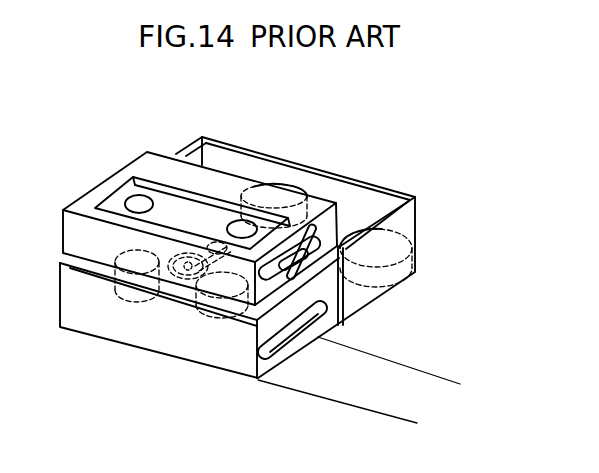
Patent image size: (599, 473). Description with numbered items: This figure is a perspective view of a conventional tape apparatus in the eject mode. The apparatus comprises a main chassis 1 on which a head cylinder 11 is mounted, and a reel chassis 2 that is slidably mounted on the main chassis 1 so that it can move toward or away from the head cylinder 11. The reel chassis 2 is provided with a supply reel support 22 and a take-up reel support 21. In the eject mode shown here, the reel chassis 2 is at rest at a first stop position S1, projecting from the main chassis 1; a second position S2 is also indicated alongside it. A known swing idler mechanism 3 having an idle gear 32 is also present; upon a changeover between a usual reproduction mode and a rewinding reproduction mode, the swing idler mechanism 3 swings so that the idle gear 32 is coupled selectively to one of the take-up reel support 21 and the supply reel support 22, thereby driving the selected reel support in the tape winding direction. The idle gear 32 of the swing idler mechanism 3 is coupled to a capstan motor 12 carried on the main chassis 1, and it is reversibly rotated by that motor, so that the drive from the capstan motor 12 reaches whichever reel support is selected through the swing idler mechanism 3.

The main chassis 1 is at (356, 298).
The reel chassis 2 is at (284, 352).
The swing idler mechanism 3 is at (195, 262).
The head cylinder 11 is at (291, 188).
The capstan motor 12 is at (412, 256).
The take-up reel support 21 is at (203, 302).
The supply reel support 22 is at (113, 292).
The idle gear 32 is at (171, 283).
The first stop position S1 is at (351, 411).
The surface S2 is at (402, 367).